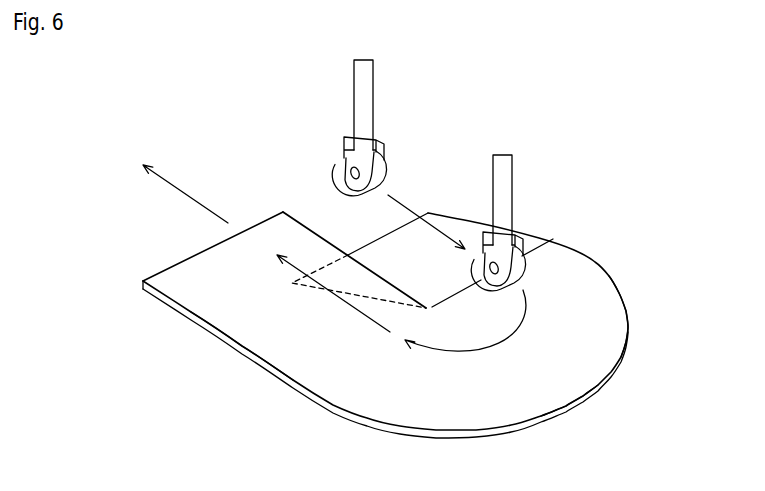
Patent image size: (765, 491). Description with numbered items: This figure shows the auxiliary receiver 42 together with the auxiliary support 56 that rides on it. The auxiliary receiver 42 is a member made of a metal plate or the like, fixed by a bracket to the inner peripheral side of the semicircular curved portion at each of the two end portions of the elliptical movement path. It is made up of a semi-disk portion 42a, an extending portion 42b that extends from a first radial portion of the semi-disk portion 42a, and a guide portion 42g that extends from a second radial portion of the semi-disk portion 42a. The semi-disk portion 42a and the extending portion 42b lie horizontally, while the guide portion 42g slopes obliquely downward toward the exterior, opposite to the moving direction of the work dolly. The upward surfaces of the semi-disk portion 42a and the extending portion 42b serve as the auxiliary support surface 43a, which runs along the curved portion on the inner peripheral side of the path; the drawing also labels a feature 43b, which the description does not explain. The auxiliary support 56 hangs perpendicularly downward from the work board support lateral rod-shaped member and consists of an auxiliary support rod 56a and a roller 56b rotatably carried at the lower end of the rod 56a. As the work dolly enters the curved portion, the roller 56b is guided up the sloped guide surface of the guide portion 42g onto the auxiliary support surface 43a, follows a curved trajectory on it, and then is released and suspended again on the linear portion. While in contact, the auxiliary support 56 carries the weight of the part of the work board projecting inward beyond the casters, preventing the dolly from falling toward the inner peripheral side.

The auxiliary receiver 42 is at (422, 319).
The semi-disk portion 42a is at (572, 403).
The extending portion 42b is at (233, 340).
The guide portion 42g is at (378, 250).
The auxiliary support surface 43a is at (612, 328).
The linear guide portion 43b is at (447, 280).
The auxiliary support 56 is at (465, 176).
The auxiliary support rod 56a is at (367, 100).
The roller 56b is at (382, 177).